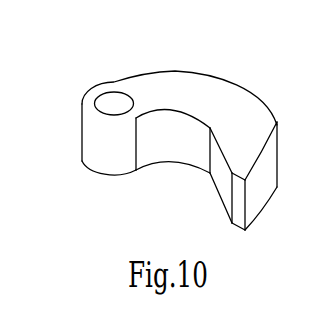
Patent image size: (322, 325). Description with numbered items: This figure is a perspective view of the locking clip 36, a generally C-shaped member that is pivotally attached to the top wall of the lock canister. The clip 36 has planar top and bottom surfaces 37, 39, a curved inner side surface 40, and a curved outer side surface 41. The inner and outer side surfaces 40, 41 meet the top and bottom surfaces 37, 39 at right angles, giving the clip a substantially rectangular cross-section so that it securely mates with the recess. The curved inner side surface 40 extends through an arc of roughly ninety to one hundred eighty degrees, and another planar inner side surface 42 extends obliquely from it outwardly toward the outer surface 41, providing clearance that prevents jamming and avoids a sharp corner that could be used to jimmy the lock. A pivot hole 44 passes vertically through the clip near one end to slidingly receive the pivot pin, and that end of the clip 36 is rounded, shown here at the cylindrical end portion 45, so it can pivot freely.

The locking clip 36 is at (208, 65).
The top surface 37 is at (248, 115).
The bottom surface 39 is at (266, 212).
The curved inner side surface 40 is at (187, 152).
The curved outer side surface 41 is at (275, 118).
The planar inner side surface 42 is at (225, 188).
The pivot hole 44 is at (108, 98).
The cylindrical boss 45 is at (100, 145).